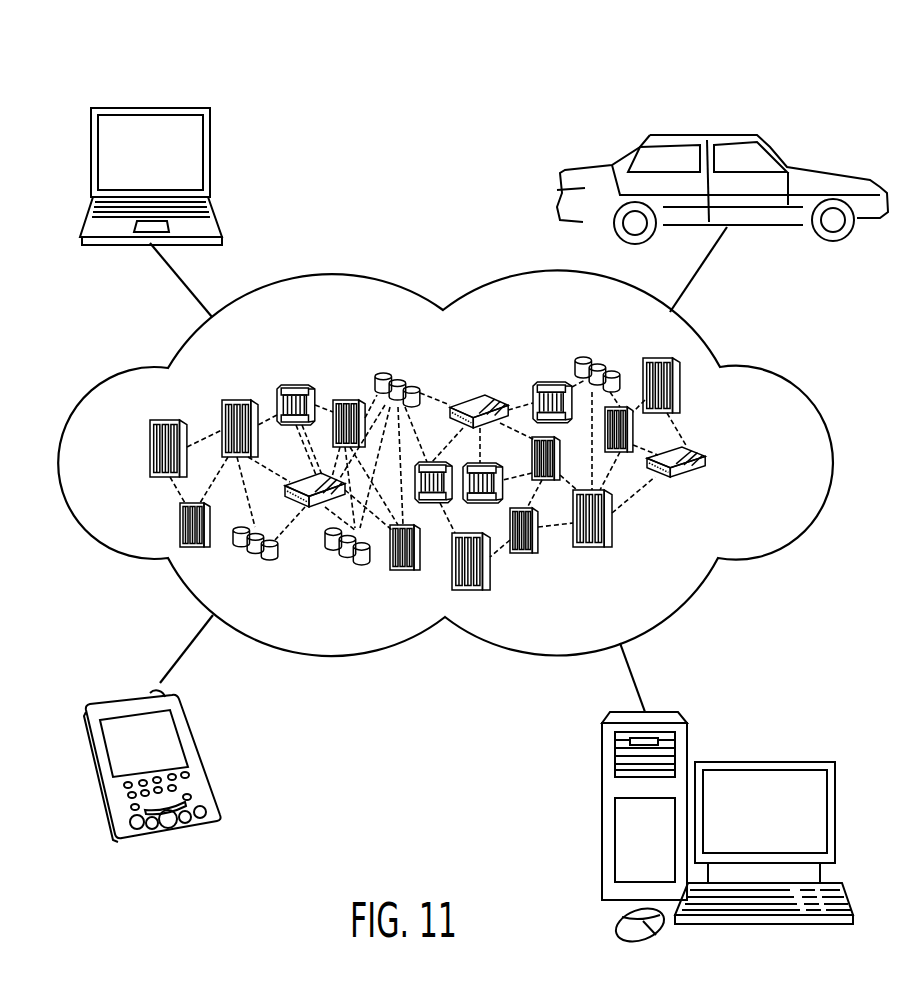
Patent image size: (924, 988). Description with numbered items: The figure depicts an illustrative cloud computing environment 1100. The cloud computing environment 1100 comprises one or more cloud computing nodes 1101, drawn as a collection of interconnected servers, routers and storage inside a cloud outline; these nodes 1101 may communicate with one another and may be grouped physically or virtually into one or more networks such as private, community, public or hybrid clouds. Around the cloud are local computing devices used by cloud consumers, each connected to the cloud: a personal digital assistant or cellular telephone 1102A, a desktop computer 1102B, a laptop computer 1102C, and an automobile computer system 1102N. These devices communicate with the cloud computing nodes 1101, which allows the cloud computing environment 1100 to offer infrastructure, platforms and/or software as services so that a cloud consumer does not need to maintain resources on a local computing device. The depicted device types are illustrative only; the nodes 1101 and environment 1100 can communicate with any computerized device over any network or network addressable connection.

The cloud computing environment 1100 is at (859, 98).
The cloud computing nodes 1101 is at (722, 465).
The personal digital assistant or cellular telephone 1102A is at (131, 696).
The desktop computer 1102B is at (764, 760).
The laptop computer 1102C is at (150, 108).
The automobile computer system 1102N is at (700, 135).